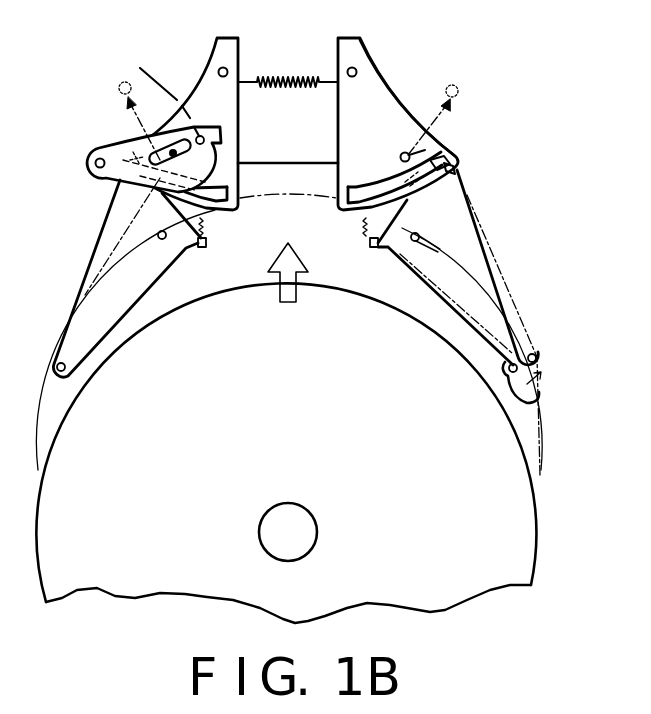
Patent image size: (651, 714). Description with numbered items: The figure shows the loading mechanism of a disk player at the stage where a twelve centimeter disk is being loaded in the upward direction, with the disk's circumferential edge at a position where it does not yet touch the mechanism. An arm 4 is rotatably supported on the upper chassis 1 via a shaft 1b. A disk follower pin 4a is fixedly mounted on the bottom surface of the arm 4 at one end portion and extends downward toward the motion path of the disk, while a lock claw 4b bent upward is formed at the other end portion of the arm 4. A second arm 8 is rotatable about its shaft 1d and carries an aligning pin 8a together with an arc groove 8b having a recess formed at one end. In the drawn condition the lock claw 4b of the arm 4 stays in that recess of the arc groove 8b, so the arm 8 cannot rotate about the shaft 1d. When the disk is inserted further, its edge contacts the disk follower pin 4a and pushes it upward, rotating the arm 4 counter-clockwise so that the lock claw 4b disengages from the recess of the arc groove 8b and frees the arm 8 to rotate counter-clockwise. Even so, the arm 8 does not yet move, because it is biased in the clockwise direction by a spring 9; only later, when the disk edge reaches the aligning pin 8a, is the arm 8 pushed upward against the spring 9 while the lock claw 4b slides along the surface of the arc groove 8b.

The upper chassis 1 is at (286, 433).
The shaft 1b is at (447, 250).
The shaft 1d is at (357, 68).
The arm 4 is at (462, 225).
The disk follower pin 4a is at (535, 402).
The lock claw 4b is at (455, 168).
The arm 8 is at (373, 97).
The aligning pin 8a is at (423, 150).
The arc groove 8b is at (370, 186).
The spring 9 is at (297, 77).